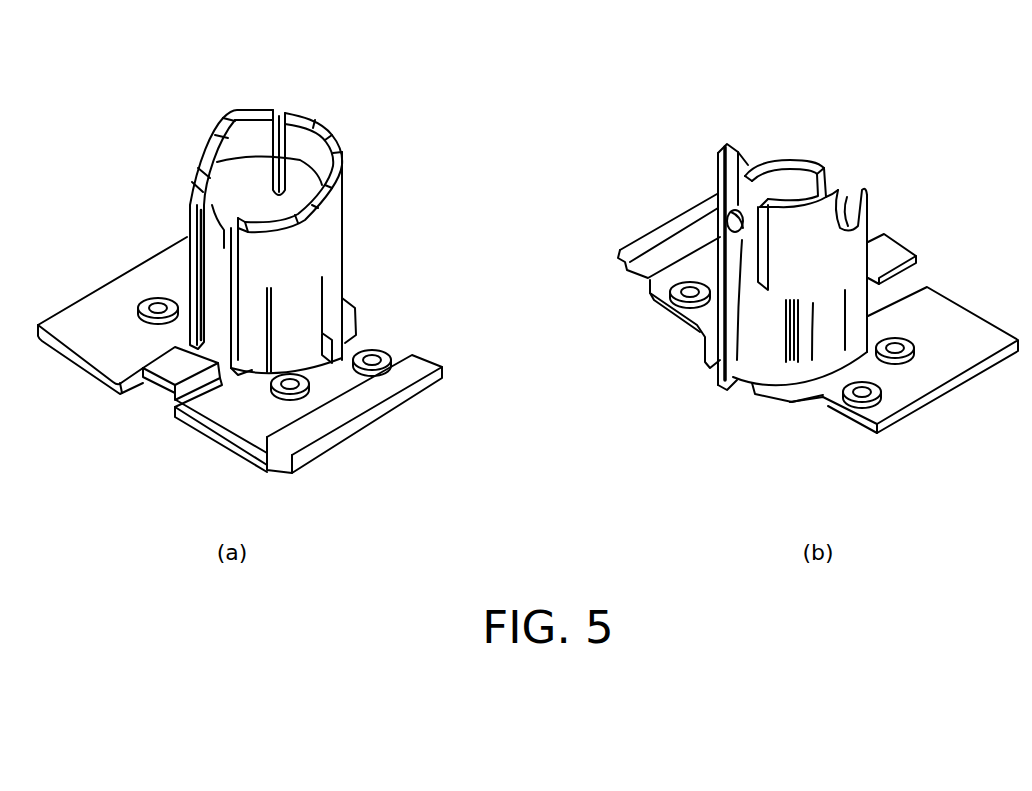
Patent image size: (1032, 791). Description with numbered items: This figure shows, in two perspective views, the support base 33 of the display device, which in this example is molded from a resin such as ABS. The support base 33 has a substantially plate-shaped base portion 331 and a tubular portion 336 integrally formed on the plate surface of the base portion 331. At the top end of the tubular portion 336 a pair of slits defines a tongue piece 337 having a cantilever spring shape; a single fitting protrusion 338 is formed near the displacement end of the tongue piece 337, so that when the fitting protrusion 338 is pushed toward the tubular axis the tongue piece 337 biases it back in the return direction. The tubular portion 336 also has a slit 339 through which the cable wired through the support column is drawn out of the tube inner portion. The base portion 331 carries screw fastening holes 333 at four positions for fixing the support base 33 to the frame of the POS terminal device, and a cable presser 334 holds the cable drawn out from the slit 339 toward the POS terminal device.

The support base 33 is at (421, 136).
The base portion 331 is at (120, 293).
The screw fastening holes 333 is at (373, 358).
The cable presser 334 is at (185, 366).
The tubular portion 336 is at (328, 243).
The tongue piece 337 is at (300, 145).
The fitting protrusion 338 is at (727, 218).
The slit 339 is at (203, 177).